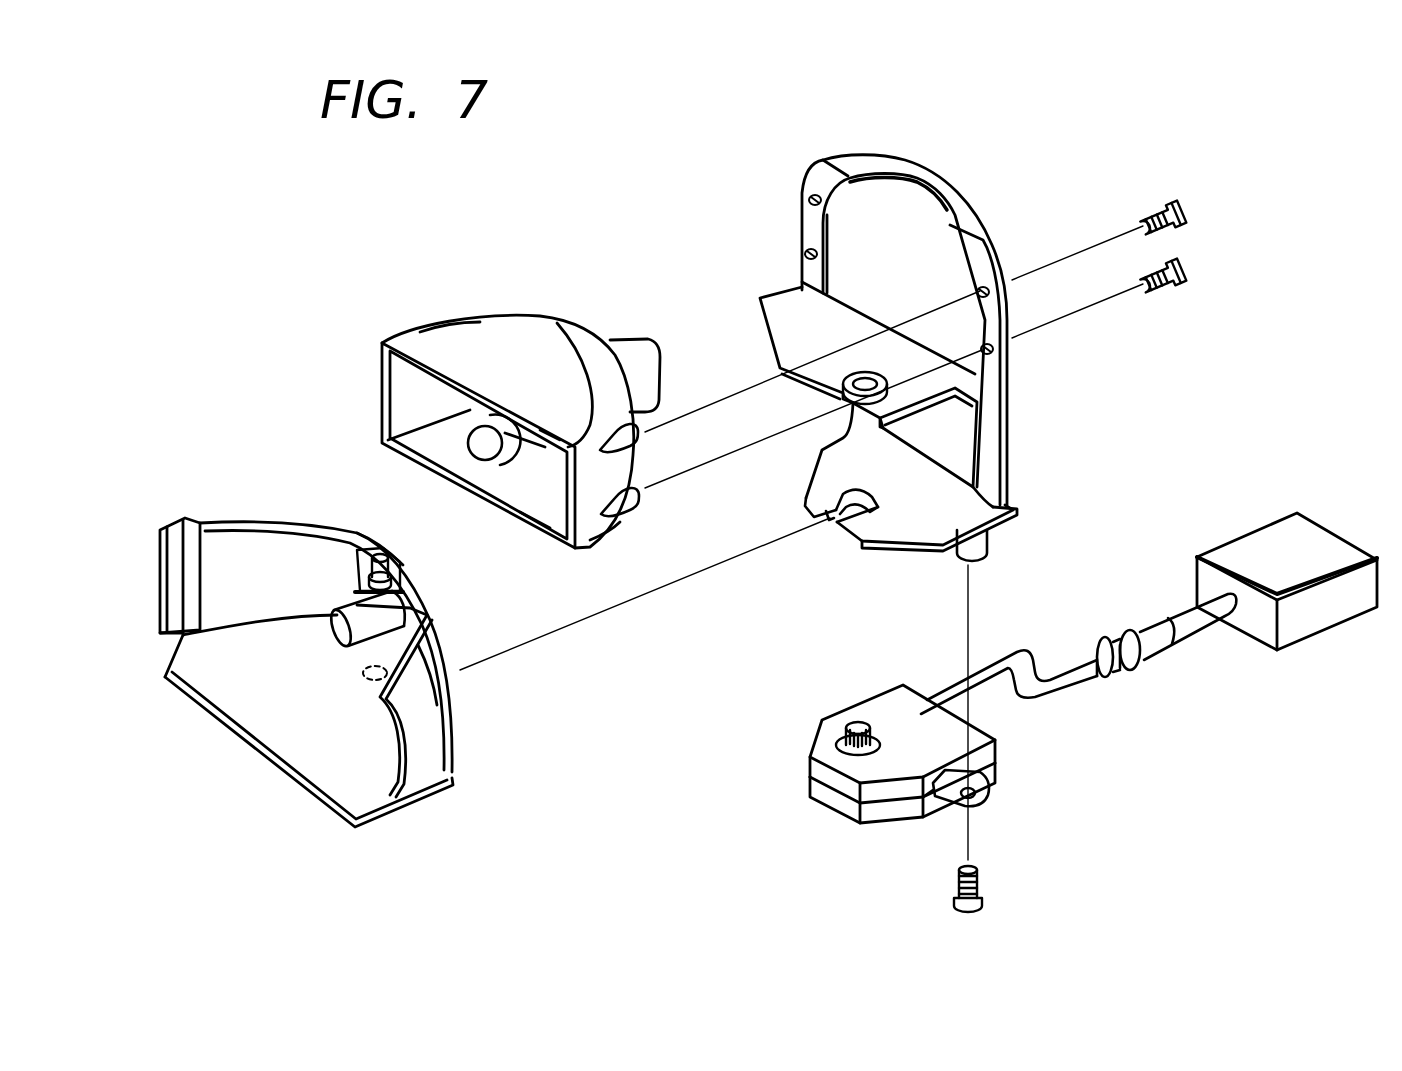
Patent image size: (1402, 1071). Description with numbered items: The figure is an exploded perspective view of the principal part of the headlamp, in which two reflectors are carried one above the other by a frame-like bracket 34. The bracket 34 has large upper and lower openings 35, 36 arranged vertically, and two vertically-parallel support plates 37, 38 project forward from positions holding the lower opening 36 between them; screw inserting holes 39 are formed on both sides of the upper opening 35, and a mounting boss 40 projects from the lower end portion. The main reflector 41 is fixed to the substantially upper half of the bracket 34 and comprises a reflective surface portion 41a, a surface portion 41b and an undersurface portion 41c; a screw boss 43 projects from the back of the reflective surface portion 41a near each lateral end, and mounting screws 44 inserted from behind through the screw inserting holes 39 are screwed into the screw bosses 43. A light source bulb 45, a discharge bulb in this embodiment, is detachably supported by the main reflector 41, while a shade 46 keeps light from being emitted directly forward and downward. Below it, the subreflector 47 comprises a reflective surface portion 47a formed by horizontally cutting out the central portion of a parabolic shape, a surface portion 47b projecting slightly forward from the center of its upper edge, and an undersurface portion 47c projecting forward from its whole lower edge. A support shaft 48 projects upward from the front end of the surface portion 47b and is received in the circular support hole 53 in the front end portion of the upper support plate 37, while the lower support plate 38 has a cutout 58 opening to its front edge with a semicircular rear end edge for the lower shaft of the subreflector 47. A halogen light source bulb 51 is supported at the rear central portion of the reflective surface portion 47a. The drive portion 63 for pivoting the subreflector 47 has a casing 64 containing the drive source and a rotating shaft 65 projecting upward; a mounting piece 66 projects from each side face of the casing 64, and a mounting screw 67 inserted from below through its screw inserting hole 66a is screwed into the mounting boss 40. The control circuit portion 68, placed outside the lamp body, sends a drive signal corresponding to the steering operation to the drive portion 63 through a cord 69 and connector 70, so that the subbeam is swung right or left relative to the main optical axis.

The bracket 34 is at (940, 182).
The upper opening 35 is at (862, 186).
The lower opening 36 is at (960, 440).
The support plate 37 is at (765, 298).
The support plate 38 is at (905, 530).
The screw inserting holes 39 is at (809, 200).
The mounting boss 40 is at (975, 545).
The main reflector 41 is at (492, 322).
The reflective surface portion 41a is at (598, 540).
The surface portion 41b is at (430, 340).
The undersurface portion 41c is at (535, 518).
The screw boss 43 is at (634, 438).
The mounting screw 44 is at (1158, 213).
The light source bulb 45 is at (550, 445).
The shade 46 is at (483, 447).
The subreflector 47 is at (445, 746).
The reflective surface portion 47a is at (432, 712).
The surface portion 47b is at (395, 562).
The undersurface portion 47c is at (300, 738).
The support shaft 48 is at (353, 546).
The light source bulb 51 is at (360, 645).
The support hole 53 is at (865, 372).
The cutout 58 is at (820, 507).
The drive portion 63 is at (848, 712).
The casing 64 is at (828, 800).
The rotating shaft 65 is at (873, 741).
The mounting piece 66 is at (988, 792).
The screw inserting hole 66a is at (965, 808).
The mounting screw 67 is at (982, 882).
The control circuit portion 68 is at (1330, 545).
The cord 69 is at (1022, 655).
The connector 70 is at (1140, 662).